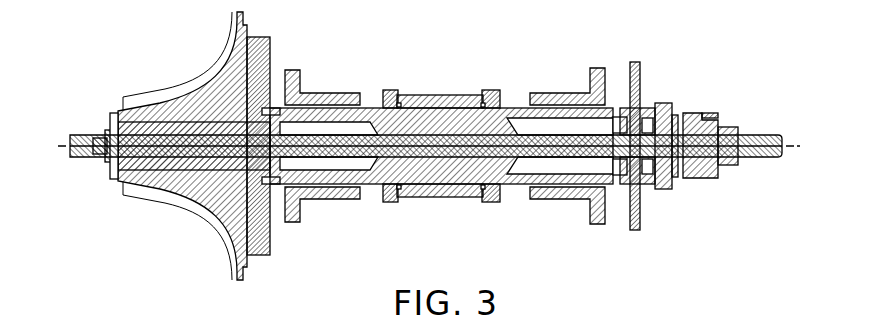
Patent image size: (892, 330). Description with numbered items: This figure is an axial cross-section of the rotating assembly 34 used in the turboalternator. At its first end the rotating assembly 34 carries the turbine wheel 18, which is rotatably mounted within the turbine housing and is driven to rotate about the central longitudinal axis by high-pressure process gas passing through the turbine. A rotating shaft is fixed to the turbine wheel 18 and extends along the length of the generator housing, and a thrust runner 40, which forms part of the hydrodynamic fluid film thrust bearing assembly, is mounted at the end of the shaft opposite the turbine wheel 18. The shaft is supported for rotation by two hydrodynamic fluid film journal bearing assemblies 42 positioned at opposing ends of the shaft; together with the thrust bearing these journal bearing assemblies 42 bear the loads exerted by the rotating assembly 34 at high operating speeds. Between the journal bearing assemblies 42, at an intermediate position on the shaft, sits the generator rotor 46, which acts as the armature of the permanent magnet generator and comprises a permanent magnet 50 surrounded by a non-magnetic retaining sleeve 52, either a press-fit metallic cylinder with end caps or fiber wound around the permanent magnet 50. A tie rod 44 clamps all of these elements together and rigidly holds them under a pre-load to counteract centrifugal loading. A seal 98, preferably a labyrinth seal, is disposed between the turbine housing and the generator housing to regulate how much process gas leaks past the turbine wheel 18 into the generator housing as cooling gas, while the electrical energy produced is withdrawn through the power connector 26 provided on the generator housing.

The turbine wheel 18 is at (177, 193).
The seal 98 is at (262, 50).
The power connector 26 is at (365, 107).
The hydrodynamic fluid film journal bearing assemblies 42 is at (328, 195).
The generator rotor 46 is at (443, 77).
The permanent magnet 50 is at (468, 193).
The non-magnetic retaining sleeve 52 is at (428, 197).
The rotating assembly 34 is at (675, 220).
The thrust runner 40 is at (637, 70).
The tie rod 44 is at (763, 138).